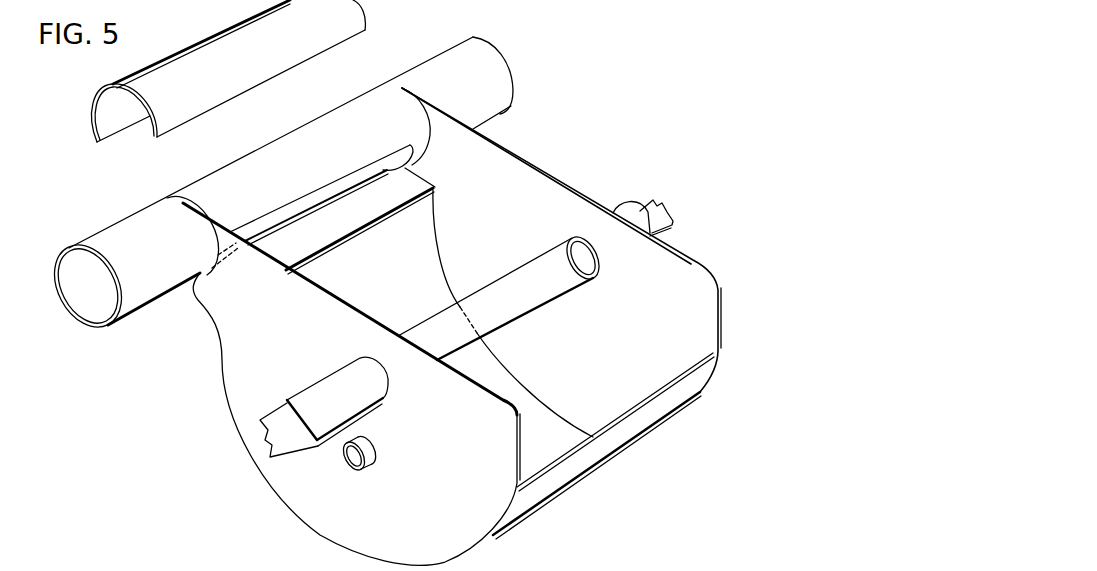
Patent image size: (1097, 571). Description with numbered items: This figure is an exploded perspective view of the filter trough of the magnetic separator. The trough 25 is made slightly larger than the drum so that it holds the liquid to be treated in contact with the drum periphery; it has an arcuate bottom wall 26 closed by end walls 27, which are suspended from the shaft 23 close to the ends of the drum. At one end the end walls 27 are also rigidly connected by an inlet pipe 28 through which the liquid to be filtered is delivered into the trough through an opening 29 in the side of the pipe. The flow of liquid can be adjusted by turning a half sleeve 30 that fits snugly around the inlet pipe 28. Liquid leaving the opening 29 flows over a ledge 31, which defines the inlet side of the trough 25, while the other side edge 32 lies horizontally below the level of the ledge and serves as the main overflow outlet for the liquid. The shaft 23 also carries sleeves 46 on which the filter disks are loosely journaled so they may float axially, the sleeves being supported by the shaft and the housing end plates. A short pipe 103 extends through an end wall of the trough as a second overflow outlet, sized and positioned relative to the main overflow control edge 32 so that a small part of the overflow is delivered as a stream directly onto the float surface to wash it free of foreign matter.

The shaft 23 is at (652, 205).
The trough 25 is at (468, 326).
The arcuate bottom wall 26 is at (577, 478).
The end walls 27 is at (694, 266).
The inlet pipe 28 is at (97, 237).
The opening 29 is at (342, 187).
The half sleeve 30 is at (263, 78).
The ledge 31 is at (370, 217).
The side edge 32 is at (651, 397).
The sleeves 46 is at (633, 207).
The short pipe 103 is at (350, 458).